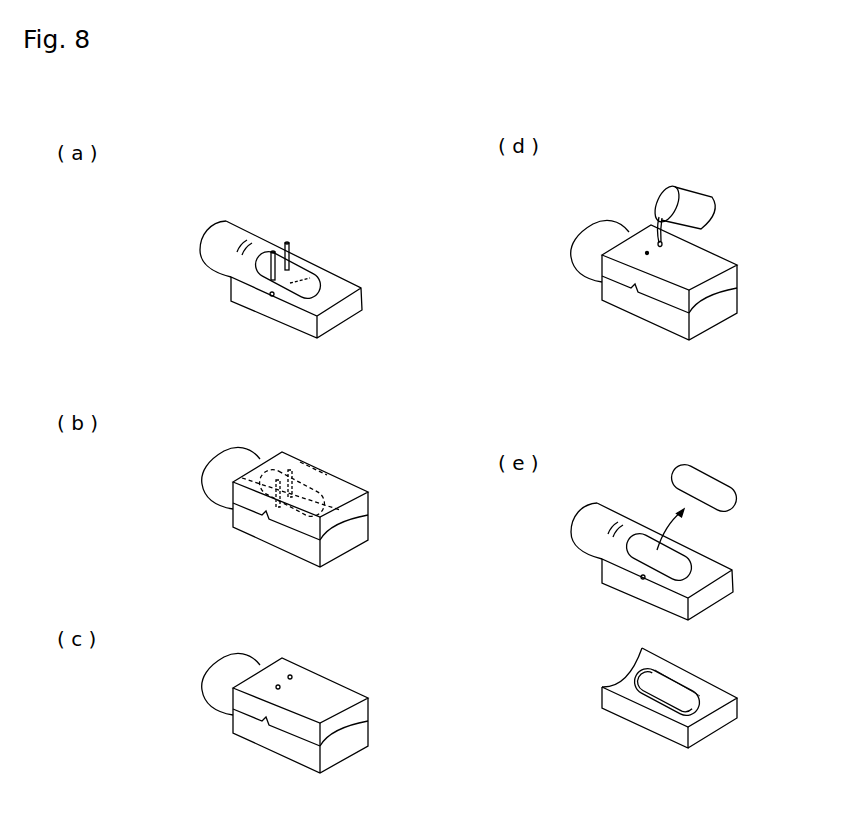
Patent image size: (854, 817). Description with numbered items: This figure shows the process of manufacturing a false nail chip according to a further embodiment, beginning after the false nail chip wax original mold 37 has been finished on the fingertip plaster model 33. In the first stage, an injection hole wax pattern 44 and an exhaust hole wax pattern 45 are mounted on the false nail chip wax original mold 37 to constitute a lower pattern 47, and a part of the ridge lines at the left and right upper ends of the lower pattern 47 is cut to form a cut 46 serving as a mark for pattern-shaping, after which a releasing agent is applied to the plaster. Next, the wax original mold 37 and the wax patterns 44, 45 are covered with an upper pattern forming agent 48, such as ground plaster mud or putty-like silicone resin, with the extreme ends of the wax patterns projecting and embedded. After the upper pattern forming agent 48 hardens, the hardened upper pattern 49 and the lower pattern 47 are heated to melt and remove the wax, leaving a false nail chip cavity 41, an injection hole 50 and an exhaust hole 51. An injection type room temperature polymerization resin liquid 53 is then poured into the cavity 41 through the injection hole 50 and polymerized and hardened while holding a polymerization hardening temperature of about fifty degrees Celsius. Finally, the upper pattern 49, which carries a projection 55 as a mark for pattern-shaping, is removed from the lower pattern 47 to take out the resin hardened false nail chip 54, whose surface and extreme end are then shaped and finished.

The fingertip plaster model 33 is at (297, 323).
The false nail chip wax original mold 37 is at (322, 287).
The false nail chip cavity 41 is at (642, 546).
The injection hole wax pattern 44 is at (288, 245).
The exhaust hole wax pattern 45 is at (271, 262).
The cut 46 is at (271, 296).
The lower pattern 47 is at (340, 268).
The upper pattern forming agent 48 is at (350, 495).
The upper pattern 49 is at (610, 700).
The injection hole 50 is at (292, 675).
The exhaust hole 51 is at (277, 685).
The room temperature polymerization resin liquid 53 is at (657, 211).
The resin hardened false nail chip 54 is at (716, 486).
The projection 55 is at (684, 673).